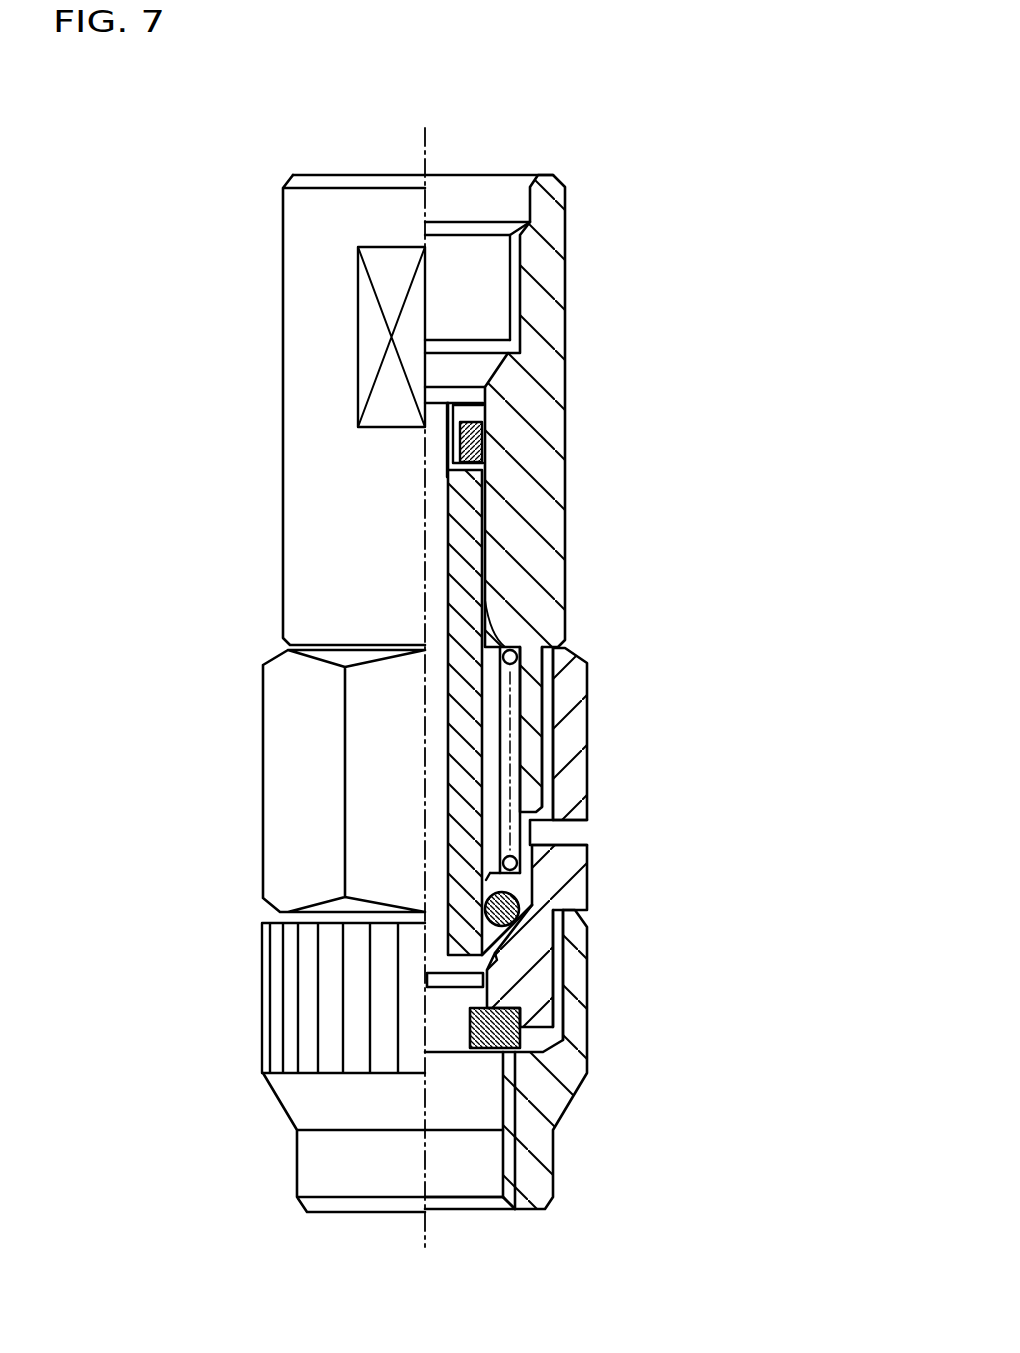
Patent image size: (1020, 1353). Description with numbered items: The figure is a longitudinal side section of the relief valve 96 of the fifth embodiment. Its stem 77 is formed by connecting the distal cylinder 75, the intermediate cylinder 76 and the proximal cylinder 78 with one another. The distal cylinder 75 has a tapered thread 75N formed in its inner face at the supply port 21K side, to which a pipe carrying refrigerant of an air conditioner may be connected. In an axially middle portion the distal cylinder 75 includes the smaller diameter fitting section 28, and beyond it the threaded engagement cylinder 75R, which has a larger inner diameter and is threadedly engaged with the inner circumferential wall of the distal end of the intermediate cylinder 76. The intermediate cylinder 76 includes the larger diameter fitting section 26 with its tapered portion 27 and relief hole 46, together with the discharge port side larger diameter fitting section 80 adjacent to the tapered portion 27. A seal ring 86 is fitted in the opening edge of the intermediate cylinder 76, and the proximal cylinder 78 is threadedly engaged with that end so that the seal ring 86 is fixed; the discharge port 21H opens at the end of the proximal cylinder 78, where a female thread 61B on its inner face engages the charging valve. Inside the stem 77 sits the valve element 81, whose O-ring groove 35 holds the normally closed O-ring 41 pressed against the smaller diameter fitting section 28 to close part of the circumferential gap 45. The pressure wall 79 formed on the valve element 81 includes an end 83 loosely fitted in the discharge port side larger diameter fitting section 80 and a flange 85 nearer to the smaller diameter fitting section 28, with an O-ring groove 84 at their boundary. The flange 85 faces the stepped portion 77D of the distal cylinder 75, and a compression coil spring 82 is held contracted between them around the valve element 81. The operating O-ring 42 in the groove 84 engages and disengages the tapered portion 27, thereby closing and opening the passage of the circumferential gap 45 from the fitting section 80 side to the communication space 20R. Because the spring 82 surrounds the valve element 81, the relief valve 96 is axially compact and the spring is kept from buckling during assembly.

The relief valve 96 is at (673, 103).
The supply port 21K is at (450, 195).
The tapered thread 75N is at (506, 250).
The stem 77 is at (543, 493).
The normally closed O-ring 41 is at (455, 430).
The O-ring groove 35 is at (462, 458).
The smaller diameter fitting section 28 is at (490, 510).
The distal cylinder 75 is at (550, 535).
The stepped portion 77D is at (507, 645).
The compression coil spring 82 is at (514, 650).
The threaded engagement cylinder 75R is at (546, 672).
The intermediate cylinder 76 is at (578, 692).
The circumferential gap 45 is at (505, 750).
The relief hole 46 is at (578, 832).
The larger diameter fitting section 26 is at (545, 880).
The operating O-ring 42 is at (516, 905).
The tapered portion 27 is at (528, 945).
The discharge port side larger diameter fitting section 80 is at (558, 975).
The seal ring 86 is at (522, 1030).
The proximal cylinder 78 is at (555, 1145).
The female thread 61B is at (500, 1205).
The discharge port 21H is at (447, 1205).
The communication space 20R is at (442, 1135).
The valve element 81 is at (462, 987).
The pressure wall 79 is at (193, 880).
The flange 85 is at (512, 875).
The O-ring groove 84 is at (495, 893).
The end 83 is at (487, 952).